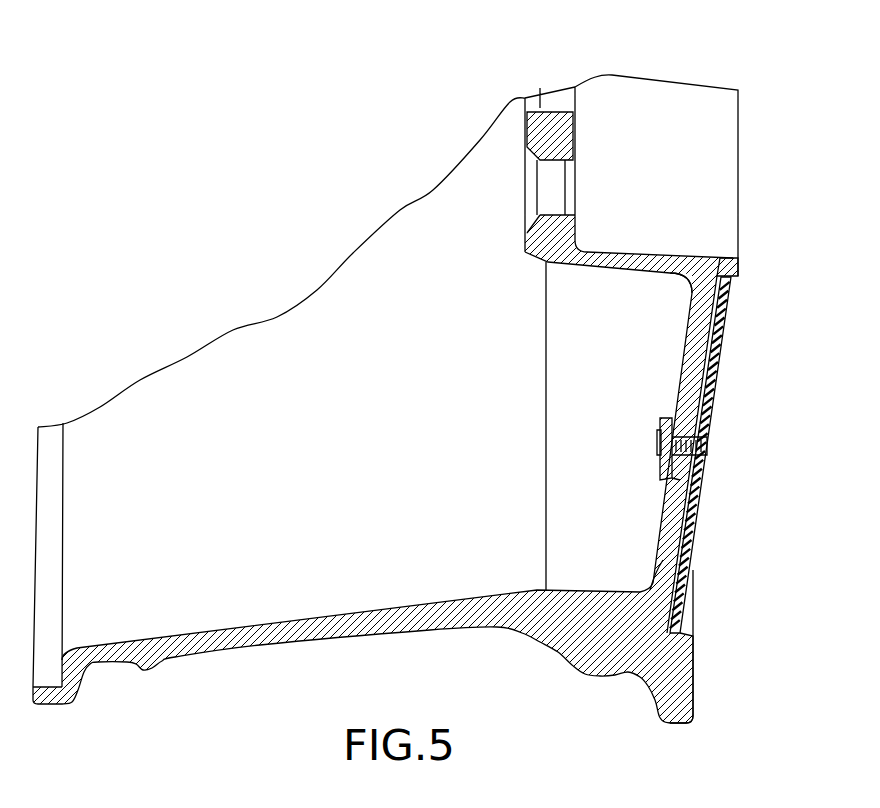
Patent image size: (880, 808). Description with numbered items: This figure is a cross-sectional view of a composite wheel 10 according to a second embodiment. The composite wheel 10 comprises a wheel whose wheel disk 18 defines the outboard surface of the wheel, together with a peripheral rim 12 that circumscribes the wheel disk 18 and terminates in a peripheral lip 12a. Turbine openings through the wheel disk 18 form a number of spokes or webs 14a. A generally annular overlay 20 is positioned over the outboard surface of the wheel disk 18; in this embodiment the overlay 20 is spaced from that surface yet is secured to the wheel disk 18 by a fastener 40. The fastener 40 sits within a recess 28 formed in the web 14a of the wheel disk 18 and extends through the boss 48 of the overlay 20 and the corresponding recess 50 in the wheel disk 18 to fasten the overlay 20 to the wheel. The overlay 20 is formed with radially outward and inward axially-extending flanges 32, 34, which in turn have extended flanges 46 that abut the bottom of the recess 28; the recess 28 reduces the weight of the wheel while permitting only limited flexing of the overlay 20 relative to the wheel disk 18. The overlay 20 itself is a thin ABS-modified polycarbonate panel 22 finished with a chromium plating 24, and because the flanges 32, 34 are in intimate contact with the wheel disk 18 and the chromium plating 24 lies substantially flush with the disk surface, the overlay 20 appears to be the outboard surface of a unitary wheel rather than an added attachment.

The composite wheel 10 is at (257, 262).
The rim 12 is at (343, 637).
The peripheral lip 12a is at (693, 720).
The web 14a is at (670, 530).
The wheel disk 18 is at (575, 148).
The overlay 20 is at (707, 498).
The panel 22 is at (697, 542).
The chromium plating 24 is at (693, 580).
The recess 28 is at (677, 478).
The radially outward flange 32 is at (675, 660).
The radially inward flange 34 is at (733, 278).
The fastener 40 is at (660, 432).
The extended flange 46 is at (718, 260).
The boss 48 is at (710, 433).
The recess 50 is at (678, 415).